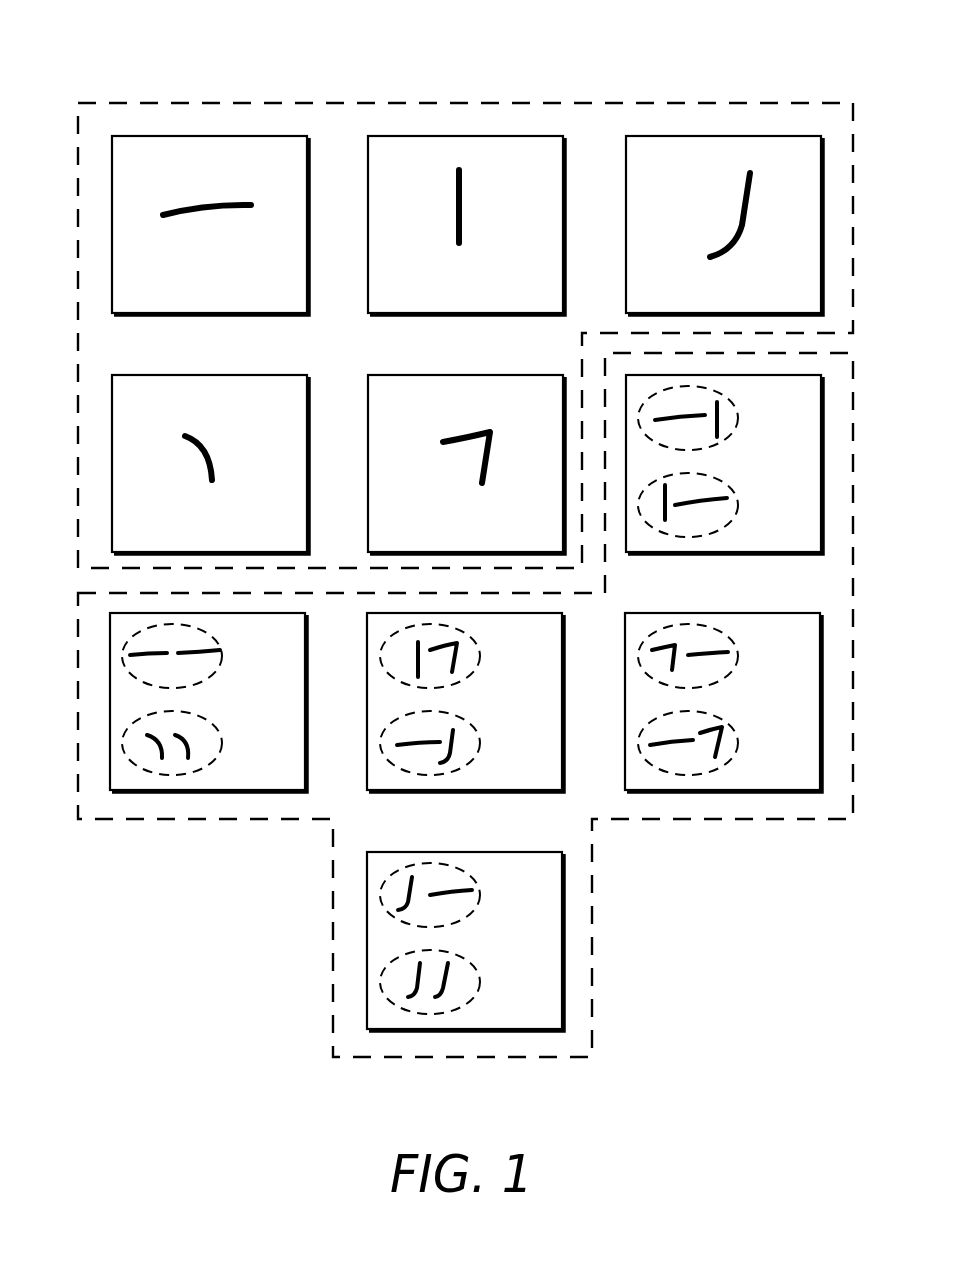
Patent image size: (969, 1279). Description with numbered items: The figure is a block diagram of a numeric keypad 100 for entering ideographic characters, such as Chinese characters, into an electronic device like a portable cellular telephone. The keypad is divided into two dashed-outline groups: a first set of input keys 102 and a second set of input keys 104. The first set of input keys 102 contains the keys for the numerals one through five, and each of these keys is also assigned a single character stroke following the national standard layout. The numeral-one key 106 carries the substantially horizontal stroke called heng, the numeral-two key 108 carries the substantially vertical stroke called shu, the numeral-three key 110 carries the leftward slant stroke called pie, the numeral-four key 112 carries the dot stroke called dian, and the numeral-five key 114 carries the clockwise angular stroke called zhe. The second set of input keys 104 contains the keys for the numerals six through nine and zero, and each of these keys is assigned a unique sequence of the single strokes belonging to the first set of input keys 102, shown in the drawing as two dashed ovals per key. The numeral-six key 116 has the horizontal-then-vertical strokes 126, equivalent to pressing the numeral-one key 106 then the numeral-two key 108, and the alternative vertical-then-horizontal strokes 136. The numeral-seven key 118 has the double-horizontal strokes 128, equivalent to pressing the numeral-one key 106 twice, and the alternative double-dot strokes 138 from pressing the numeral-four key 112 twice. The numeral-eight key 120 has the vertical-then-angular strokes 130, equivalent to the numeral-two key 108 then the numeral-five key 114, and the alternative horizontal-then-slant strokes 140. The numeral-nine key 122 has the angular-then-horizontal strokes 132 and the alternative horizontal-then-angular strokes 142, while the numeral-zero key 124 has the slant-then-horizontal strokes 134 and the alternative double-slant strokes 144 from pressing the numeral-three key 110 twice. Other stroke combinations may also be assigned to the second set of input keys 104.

The numeric keypad 100 is at (80, 36).
The first set of input keys 102 is at (78, 226).
The second set of input keys 104 is at (78, 716).
The numeral 1 key 106 is at (208, 136).
The numeral 2 key 108 is at (467, 136).
The numeral 3 key 110 is at (723, 136).
The numeral 4 key 112 is at (112, 462).
The numeral 5 key 114 is at (463, 375).
The numeral 6 key 116 is at (762, 464).
The numeral 7 key 118 is at (208, 735).
The numeral 8 key 120 is at (465, 726).
The numeral 9 key 122 is at (723, 735).
The numeral 0 key 124 is at (465, 975).
The horizontal-vertical strokes 126 is at (738, 412).
The horizontal-horizontal strokes 128 is at (221, 651).
The vertical-angular strokes 130 is at (479, 649).
The angular-horizontal strokes 132 is at (736, 649).
The slant-horizontal strokes 134 is at (478, 888).
The vertical-horizontal strokes 136 is at (738, 499).
The dot-dot strokes 138 is at (221, 737).
The horizontal-slant strokes 140 is at (479, 737).
The horizontal-angular strokes 142 is at (736, 737).
The slant-slant strokes 144 is at (478, 974).